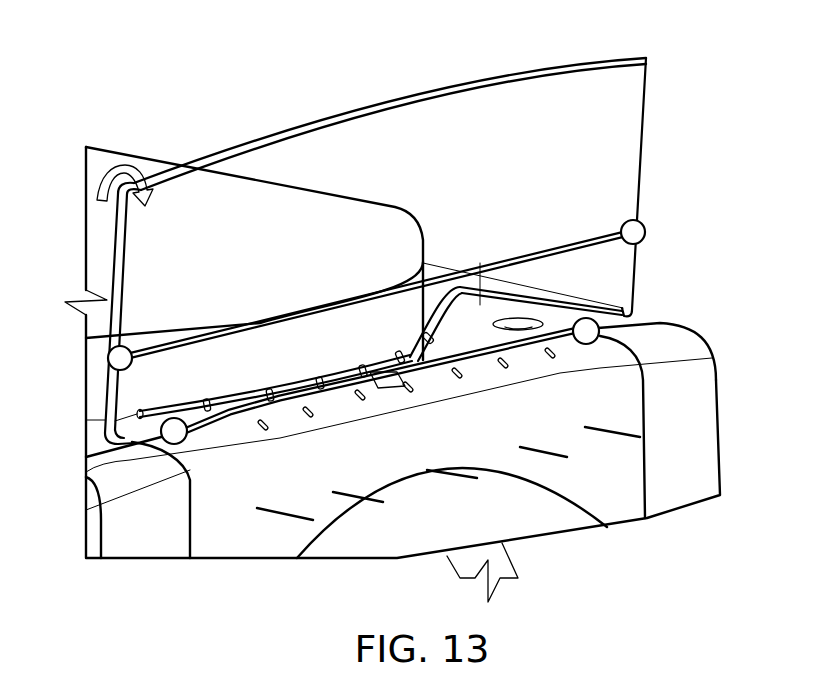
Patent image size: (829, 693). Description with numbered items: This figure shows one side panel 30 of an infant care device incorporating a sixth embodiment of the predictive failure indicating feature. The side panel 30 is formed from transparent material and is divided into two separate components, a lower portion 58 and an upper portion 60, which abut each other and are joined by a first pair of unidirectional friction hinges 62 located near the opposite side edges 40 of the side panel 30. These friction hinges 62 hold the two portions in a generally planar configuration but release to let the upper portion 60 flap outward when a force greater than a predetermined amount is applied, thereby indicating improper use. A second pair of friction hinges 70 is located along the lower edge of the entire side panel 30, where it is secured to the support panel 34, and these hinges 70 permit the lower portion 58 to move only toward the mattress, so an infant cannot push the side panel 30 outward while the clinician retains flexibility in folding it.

The side panel 30 is at (397, 246).
The support panel 34 is at (627, 515).
The side edges 40 is at (649, 86).
The lower portion 58 is at (615, 270).
The upper portion 60 is at (622, 134).
The friction hinges 62 is at (647, 225).
The second pair of friction hinges 70 is at (598, 348).